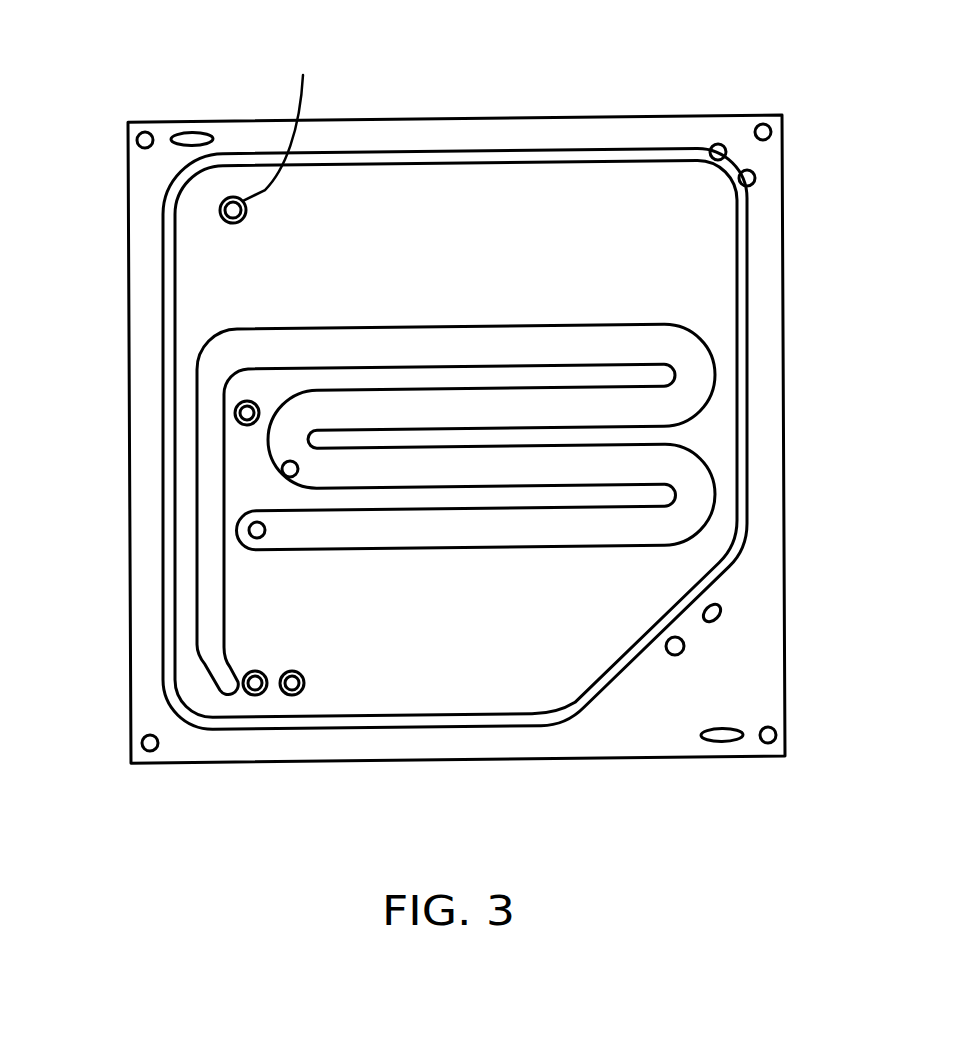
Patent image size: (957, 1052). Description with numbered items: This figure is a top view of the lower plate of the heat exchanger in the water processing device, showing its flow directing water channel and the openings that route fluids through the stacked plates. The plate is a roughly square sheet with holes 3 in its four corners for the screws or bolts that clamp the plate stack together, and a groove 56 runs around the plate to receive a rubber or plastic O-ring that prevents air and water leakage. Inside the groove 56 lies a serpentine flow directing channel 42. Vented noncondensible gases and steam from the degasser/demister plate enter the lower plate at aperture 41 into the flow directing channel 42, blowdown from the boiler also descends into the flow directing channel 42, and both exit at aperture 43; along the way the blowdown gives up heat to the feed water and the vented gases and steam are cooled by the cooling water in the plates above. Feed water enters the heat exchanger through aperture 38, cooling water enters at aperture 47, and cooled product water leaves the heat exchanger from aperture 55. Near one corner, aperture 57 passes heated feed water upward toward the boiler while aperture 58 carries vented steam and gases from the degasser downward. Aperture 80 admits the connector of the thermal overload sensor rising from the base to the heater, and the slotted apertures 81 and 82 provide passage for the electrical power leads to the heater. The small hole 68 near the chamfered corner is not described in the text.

The holes 3 is at (145, 131).
The aperture 81 is at (186, 133).
The aperture 57 is at (712, 153).
The aperture 58 is at (752, 190).
The flow directing channel 42 is at (245, 344).
The aperture 38 is at (238, 421).
The aperture 43 is at (284, 475).
The aperture 41 is at (251, 538).
The grooves 56 is at (738, 390).
The aperture 80 is at (720, 624).
The hole 68 is at (671, 660).
The aperture 82 is at (720, 748).
The aperture 55 is at (258, 697).
The aperture 47 is at (296, 698).